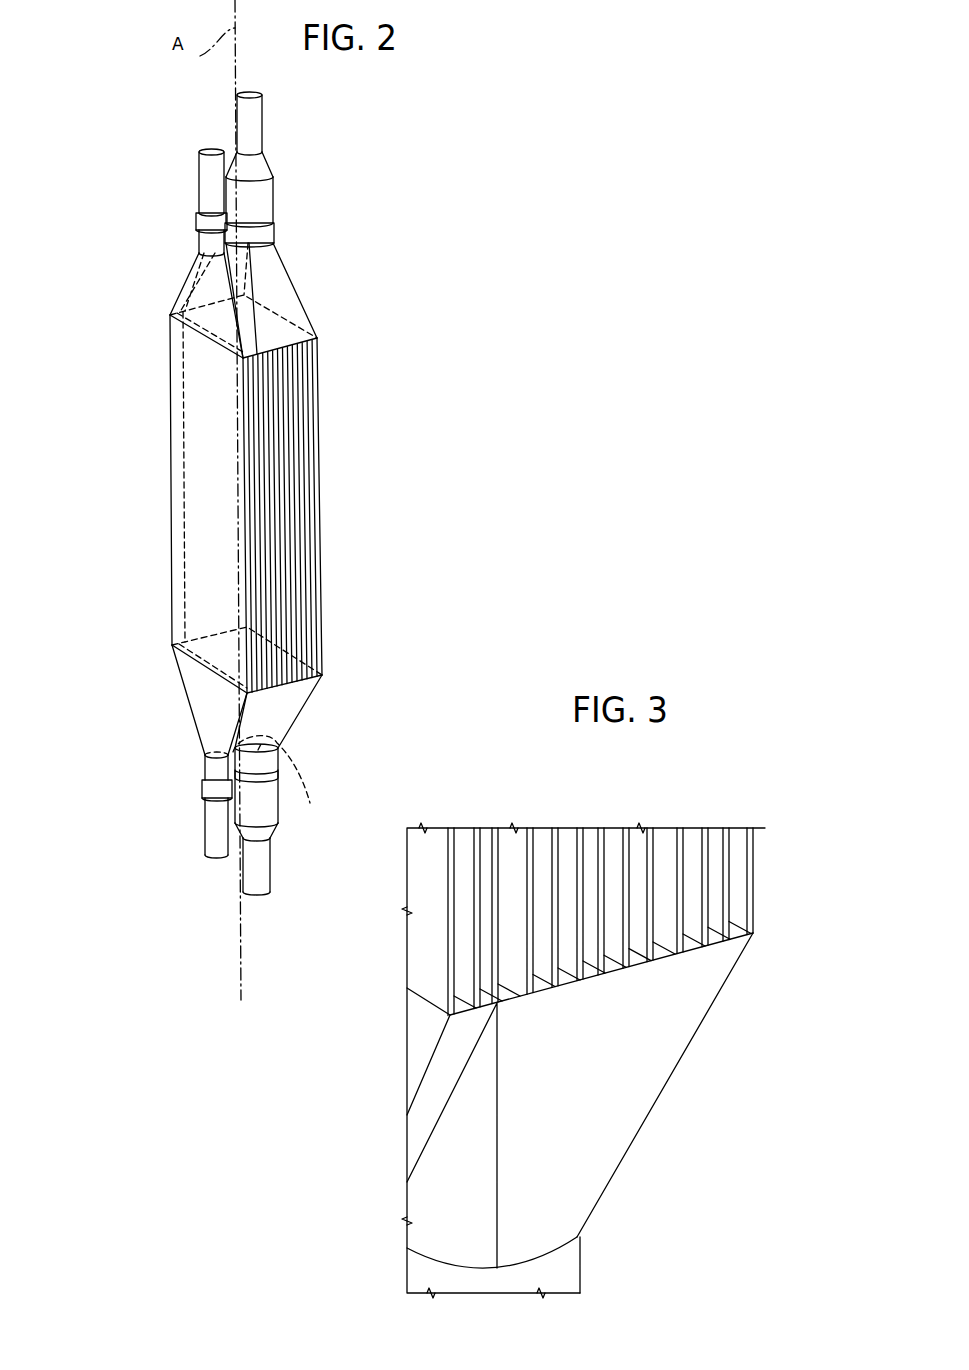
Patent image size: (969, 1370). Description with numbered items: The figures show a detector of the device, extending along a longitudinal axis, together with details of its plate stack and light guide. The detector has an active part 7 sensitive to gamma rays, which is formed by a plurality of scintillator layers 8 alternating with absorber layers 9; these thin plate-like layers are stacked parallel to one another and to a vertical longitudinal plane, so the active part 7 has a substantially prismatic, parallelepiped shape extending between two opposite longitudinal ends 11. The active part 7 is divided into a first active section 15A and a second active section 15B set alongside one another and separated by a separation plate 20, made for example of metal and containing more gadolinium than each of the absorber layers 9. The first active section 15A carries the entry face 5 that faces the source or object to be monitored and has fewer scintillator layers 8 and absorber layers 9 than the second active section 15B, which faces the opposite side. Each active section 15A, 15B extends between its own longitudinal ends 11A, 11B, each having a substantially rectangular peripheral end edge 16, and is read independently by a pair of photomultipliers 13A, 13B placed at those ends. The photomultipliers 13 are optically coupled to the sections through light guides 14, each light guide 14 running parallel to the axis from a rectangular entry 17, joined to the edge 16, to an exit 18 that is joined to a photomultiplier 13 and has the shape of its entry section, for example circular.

In FIG. 2, the entry face 5 is at (205, 477).
In FIG. 2, the active part 7 is at (140, 435).
In FIG. 3, the scintillator layers 8 is at (665, 840).
In FIG. 3, the absorber layers 9 is at (678, 840).
In FIG. 2, the longitudinal ends 11 is at (357, 293).
In FIG. 3, the longitudinal ends 11 is at (685, 962).
In FIG. 2, the longitudinal end of active section 11A is at (185, 340).
In FIG. 2, the longitudinal end of active section 11B is at (297, 356).
In FIG. 2, the photomultipliers 13 is at (207, 135).
In FIG. 3, the photomultipliers 13 is at (560, 1266).
In FIG. 2, the photomultiplier 13A is at (213, 183).
In FIG. 2, the photomultiplier 13B is at (275, 188).
In FIG. 2, the light guide 14 is at (208, 285).
In FIG. 3, the light guide 14 is at (625, 1085).
In FIG. 2, the first active section 15A is at (200, 523).
In FIG. 2, the second active section 15B is at (298, 522).
In FIG. 2, the peripheral end edge 16 is at (180, 315).
In FIG. 2, the entry 17 is at (222, 640).
In FIG. 2, the exit 18 is at (310, 803).
In FIG. 2, the separation plate 20 is at (258, 428).
In FIG. 3, the separation plate 20 is at (505, 853).